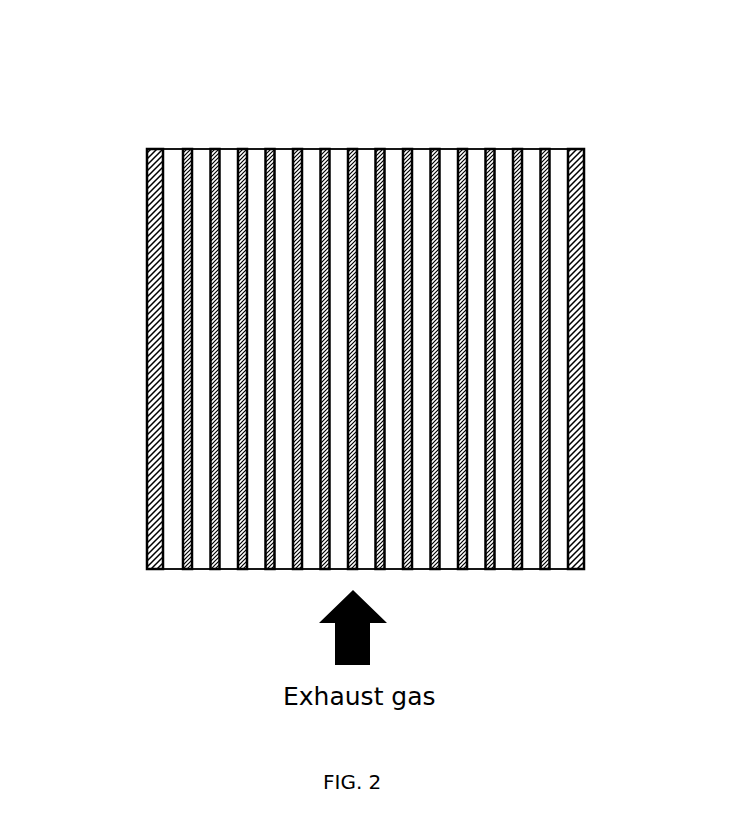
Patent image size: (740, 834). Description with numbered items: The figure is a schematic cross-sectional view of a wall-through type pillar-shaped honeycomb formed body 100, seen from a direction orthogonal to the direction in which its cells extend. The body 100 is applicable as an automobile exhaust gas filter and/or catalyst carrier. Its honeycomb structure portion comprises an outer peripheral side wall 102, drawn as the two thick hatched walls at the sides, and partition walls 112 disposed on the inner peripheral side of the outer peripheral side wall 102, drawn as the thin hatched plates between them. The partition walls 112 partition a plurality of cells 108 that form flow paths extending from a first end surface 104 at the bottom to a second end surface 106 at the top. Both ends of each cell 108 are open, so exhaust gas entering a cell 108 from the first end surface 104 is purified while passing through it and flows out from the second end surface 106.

The pillar-shaped honeycomb formed body 100 is at (349, 114).
The outer peripheral side wall 102 is at (147, 190).
The first end surface 104 is at (148, 569).
The second end surface 106 is at (163, 149).
The cell 108 is at (445, 159).
The partition wall 112 is at (183, 305).